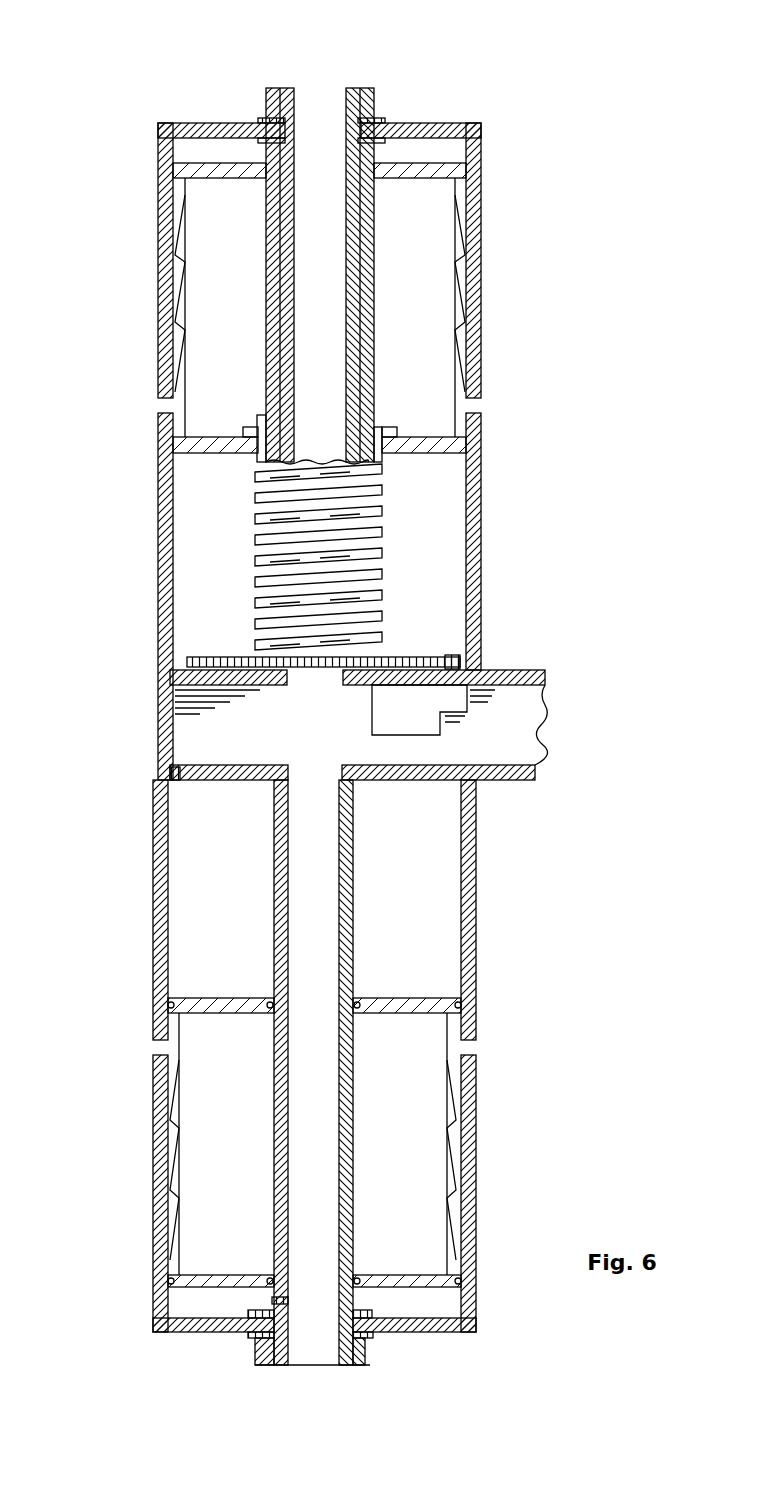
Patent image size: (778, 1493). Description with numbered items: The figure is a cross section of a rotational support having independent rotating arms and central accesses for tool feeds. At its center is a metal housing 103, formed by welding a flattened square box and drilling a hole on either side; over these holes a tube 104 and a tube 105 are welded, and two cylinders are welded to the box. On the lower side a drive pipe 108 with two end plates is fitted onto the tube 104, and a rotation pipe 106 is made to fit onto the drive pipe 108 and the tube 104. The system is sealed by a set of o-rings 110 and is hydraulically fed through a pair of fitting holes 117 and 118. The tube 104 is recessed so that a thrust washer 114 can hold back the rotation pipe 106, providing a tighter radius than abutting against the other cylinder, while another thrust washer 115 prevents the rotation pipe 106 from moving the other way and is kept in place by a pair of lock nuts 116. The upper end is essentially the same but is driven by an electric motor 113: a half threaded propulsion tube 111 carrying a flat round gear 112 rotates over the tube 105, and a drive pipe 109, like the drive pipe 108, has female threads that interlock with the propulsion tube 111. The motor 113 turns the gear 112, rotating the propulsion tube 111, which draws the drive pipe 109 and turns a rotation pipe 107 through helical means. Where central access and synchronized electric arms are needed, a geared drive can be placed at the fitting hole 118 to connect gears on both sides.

The housing 103 is at (541, 678).
The tube 104 is at (302, 919).
The tube 105 is at (329, 118).
The rotation pipe 106 is at (160, 1247).
The rotation pipe 107 is at (162, 155).
The drive pipe 108 is at (175, 1147).
The drive pipe 109 is at (178, 272).
The o-rings 110 is at (167, 1003).
The half threaded propulsion tube 111 is at (255, 522).
The flat round gear 112 is at (216, 657).
The electric motor 113 is at (405, 716).
The thrust washer 114 is at (357, 1312).
The thrust washer 115 is at (248, 1335).
The lock nuts 116 is at (362, 1352).
The fitting hole 117 is at (272, 1300).
The fitting hole 118 is at (172, 768).